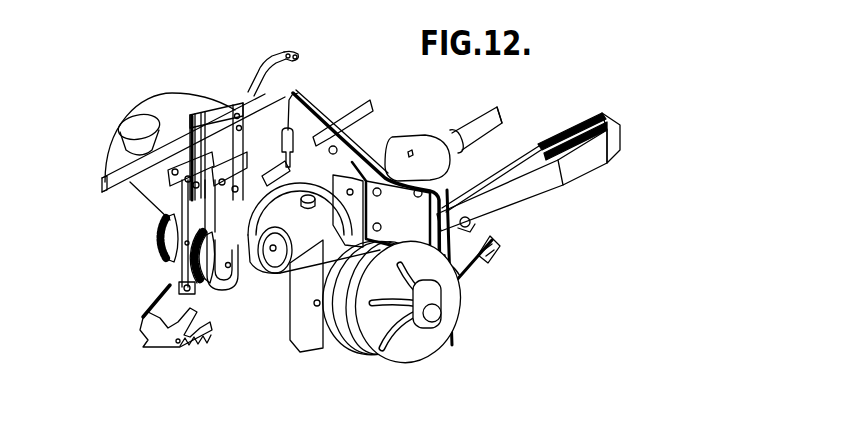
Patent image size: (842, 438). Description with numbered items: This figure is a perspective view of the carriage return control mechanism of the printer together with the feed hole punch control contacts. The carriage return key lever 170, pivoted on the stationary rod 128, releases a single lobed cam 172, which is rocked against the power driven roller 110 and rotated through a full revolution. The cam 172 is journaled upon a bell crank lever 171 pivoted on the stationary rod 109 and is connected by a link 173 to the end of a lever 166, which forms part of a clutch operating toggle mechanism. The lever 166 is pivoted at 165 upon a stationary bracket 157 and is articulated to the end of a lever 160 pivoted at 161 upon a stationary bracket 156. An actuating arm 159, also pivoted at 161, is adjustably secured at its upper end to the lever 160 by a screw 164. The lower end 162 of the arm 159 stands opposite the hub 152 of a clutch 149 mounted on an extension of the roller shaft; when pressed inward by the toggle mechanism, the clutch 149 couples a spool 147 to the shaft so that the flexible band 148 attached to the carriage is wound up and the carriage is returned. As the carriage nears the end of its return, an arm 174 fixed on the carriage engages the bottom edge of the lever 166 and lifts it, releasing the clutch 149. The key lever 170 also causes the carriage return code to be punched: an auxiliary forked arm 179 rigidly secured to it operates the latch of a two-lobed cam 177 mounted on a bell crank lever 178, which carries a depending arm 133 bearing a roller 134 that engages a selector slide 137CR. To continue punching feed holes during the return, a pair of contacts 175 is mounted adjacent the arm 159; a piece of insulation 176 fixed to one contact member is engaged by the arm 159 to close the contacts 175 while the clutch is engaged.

The power driven roller 110 is at (143, 181).
The stationary rod 128 is at (300, 50).
The carriage return key lever 170 is at (170, 150).
The auxiliary forked arm 179 is at (197, 110).
The link 173 is at (283, 124).
The arm 174 is at (363, 94).
The pivot 165 is at (332, 154).
The lever 166 is at (333, 90).
The screw 164 is at (453, 190).
The lever 160 is at (410, 186).
The stationary bracket 157 is at (354, 160).
The bell crank lever 171 is at (236, 222).
The pair of contacts 175 is at (487, 204).
The piece of insulation 176 is at (472, 226).
The stationary bracket 156 is at (500, 248).
The flexible band 148 is at (478, 261).
The actuating arm 159 is at (448, 278).
The pivot 161 is at (442, 294).
The spool 147 is at (347, 331).
The clutch 149 is at (372, 338).
The hub 152 is at (416, 326).
The lower end 162 is at (440, 317).
The stationary rod 109 is at (160, 214).
The two-lobed cam 177 is at (194, 254).
The bell crank lever 178 is at (180, 213).
The depending arm 133 is at (180, 286).
The single lobed cam 172 is at (224, 289).
The roller 134 is at (150, 307).
The selector slide 137CR is at (143, 320).